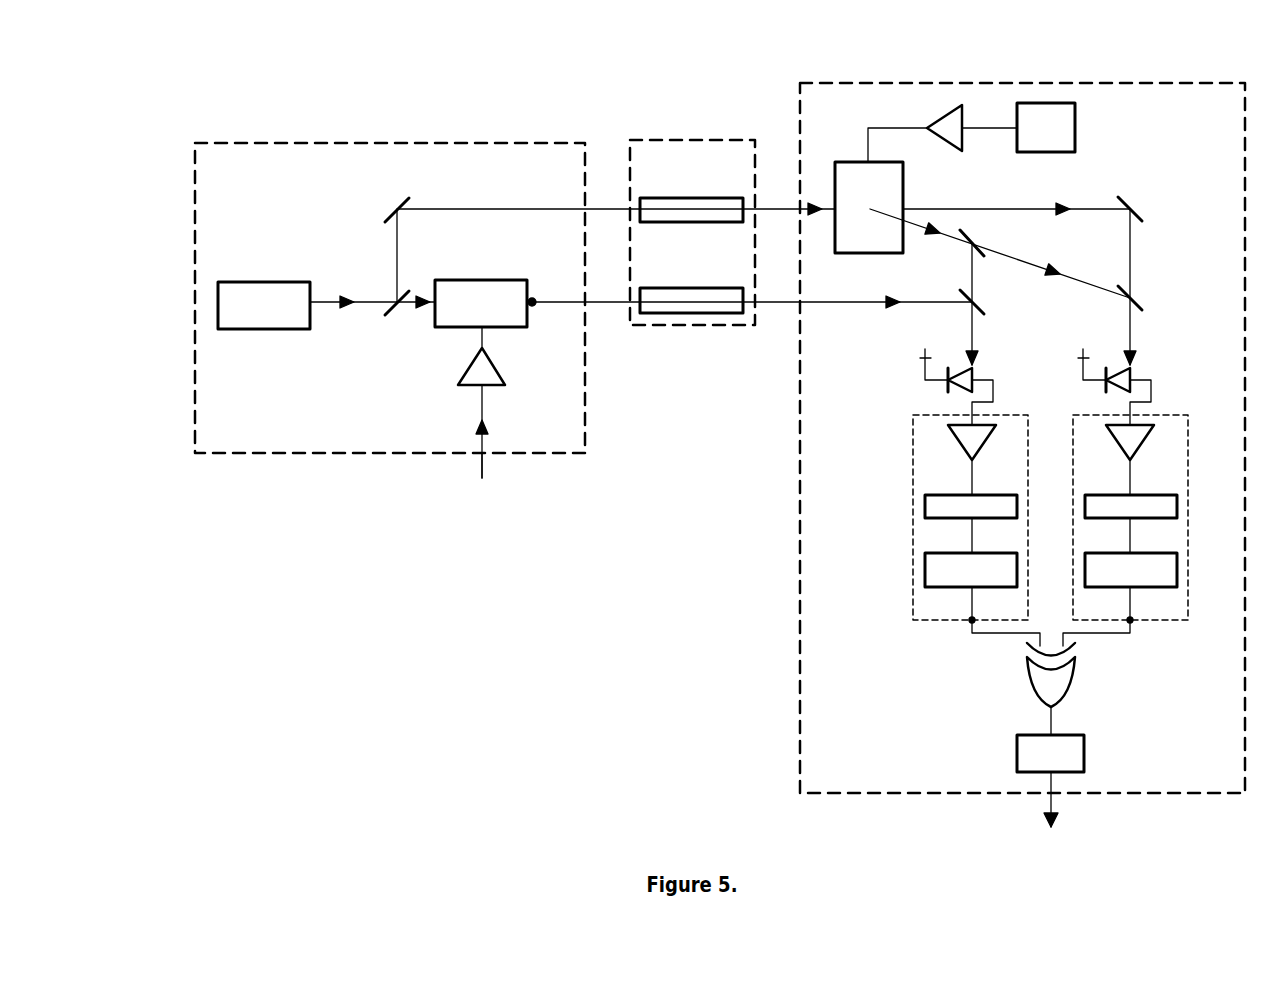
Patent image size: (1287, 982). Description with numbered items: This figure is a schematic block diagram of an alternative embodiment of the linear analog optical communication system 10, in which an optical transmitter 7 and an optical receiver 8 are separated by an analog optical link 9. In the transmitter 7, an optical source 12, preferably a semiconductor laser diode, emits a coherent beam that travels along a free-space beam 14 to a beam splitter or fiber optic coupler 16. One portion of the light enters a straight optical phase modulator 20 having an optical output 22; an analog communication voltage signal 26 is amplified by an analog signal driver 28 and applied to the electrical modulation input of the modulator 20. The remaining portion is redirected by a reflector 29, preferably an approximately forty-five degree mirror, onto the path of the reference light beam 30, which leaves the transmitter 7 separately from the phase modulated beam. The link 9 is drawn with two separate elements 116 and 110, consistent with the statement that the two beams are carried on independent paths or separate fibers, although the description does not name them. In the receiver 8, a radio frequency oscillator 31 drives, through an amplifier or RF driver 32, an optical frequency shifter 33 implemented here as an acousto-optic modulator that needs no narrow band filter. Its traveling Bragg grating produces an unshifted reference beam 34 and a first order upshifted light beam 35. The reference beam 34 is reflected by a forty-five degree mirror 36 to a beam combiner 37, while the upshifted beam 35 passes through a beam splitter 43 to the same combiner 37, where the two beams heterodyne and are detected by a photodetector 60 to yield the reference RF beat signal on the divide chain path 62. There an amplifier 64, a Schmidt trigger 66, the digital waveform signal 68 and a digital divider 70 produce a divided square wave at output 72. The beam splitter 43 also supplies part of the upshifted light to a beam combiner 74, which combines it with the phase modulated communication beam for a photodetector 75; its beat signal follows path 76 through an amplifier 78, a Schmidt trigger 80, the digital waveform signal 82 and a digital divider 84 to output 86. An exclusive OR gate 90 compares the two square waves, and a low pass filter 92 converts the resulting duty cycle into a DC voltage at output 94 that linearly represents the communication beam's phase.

The linear analog optical communication system 10 is at (563, 60).
The optical transmitter 7 is at (460, 141).
The optical receiver 8 is at (1040, 83).
The analog optical link 9 is at (692, 138).
The optical source 12 is at (264, 305).
The free-space beam 14 is at (320, 304).
The beam splitter or fiber optic coupler 16 is at (405, 318).
The straight optical phase modulator 20 is at (481, 303).
The optical output 22 is at (749, 313).
The analog communication voltage signal 26 is at (480, 457).
The analog signal driver 28 is at (483, 370).
The reflector 29 is at (400, 197).
The reference light beam 30 is at (482, 210).
The radio frequency oscillator 31 is at (1018, 127).
The amplifier or RF driver 32 is at (933, 122).
The optical frequency shifter 33 is at (905, 178).
The reference beam 34 is at (980, 207).
The upshifted light beam 35 is at (948, 235).
The 45° mirror 36 is at (1142, 208).
The beam combiner 37 is at (1142, 300).
The beam splitter 43 is at (968, 233).
The photodetector 60 is at (1155, 385).
The divide chain path 62 is at (1185, 412).
The amplifier 64 is at (1137, 443).
The Schmidt trigger 66 is at (1131, 507).
The digital waveform signal 68 is at (1132, 530).
The digital divider 70 is at (1170, 565).
The output 72 is at (1133, 622).
The beam combiner 74 is at (983, 307).
The photodetector 75 is at (995, 385).
The path 76 is at (913, 428).
The amplifier 78 is at (978, 443).
The Schmidt trigger 80 is at (971, 507).
The digital waveform signal 82 is at (968, 540).
The digital divider 84 is at (927, 572).
The output 86 is at (968, 622).
The exclusive OR gate 90 is at (1032, 683).
The low pass filter 92 is at (1087, 742).
The output 94 is at (1053, 803).
The optical fiber 110 is at (690, 288).
The optical fiber 116 is at (693, 193).